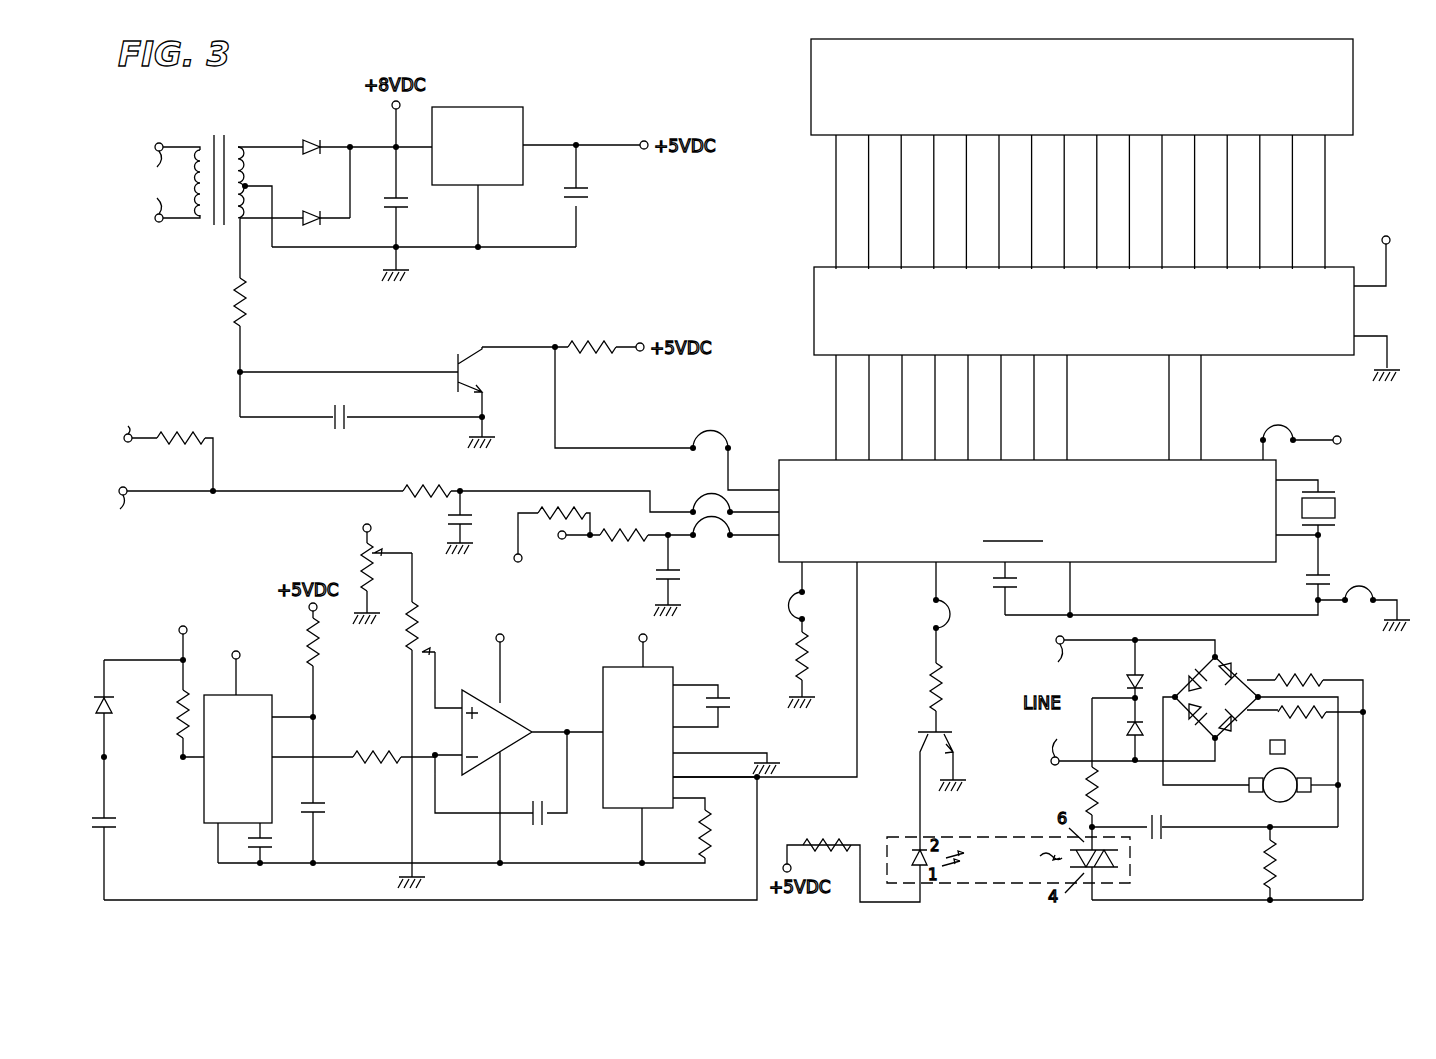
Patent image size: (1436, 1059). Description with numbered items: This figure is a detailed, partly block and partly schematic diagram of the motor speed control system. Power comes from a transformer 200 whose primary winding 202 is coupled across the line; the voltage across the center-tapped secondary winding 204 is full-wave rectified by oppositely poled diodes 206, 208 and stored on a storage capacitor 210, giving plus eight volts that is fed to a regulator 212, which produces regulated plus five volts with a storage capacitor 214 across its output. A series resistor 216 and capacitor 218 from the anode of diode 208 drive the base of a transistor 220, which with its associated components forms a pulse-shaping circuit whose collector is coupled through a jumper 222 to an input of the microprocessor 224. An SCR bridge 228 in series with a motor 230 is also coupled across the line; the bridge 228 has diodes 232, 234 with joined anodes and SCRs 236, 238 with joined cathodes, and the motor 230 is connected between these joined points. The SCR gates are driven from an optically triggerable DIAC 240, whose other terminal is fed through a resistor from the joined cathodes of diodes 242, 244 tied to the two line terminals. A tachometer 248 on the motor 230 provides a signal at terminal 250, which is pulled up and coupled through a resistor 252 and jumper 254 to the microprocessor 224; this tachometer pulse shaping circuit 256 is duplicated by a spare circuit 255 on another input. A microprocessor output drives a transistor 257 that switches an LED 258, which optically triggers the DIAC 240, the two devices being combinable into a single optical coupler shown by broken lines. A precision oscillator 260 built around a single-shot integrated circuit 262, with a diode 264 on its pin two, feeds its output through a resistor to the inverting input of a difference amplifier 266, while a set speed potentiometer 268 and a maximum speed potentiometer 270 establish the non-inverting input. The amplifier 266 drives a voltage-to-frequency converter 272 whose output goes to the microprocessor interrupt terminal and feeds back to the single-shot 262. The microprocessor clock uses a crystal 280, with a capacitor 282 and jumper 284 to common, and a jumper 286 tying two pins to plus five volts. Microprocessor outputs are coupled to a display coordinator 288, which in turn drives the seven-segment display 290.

The transformer 200 is at (226, 125).
The primary winding 202 is at (197, 198).
The secondary winding 204 is at (258, 184).
The diode 206 is at (311, 143).
The diode 208 is at (337, 207).
The storage capacitor 210 is at (410, 202).
The +5 VDC regulator 212 is at (523, 123).
The storage capacitor 214 is at (588, 198).
The resistor 216 is at (254, 303).
The capacitor 218 is at (351, 411).
The transistor 220 is at (456, 361).
The jumper 222 is at (698, 442).
The microprocessor 224 is at (1156, 550).
The SCR bridge 228 is at (1300, 680).
The motor 230 is at (1260, 798).
The diode 232 is at (1187, 676).
The diode 234 is at (1190, 721).
The SCR 236 is at (1245, 672).
The SCR 238 is at (1240, 740).
The optically triggerable DIAC 240 is at (1118, 863).
The diode 242 is at (1126, 680).
The diode 244 is at (1128, 732).
The tachometer 248 is at (1287, 747).
The terminal 250 is at (255, 512).
The resistor 252 is at (428, 478).
The jumper 254 is at (701, 499).
The circuit 255 is at (623, 576).
The tachometer pulse shaping circuit 256 is at (181, 386).
The transistor 257 is at (946, 730).
The LED 258 is at (905, 855).
The precision oscillator 260 is at (233, 575).
The single-shot integrated circuit 262 is at (200, 821).
The diode 264 is at (114, 706).
The difference amplifier 266 is at (477, 698).
The set speed potentiometer 268 is at (362, 570).
The maximum speed potentiometer 270 is at (398, 720).
The voltage-to-frequency converter 272 is at (612, 700).
The crystal 280 is at (1337, 507).
The capacitor 282 is at (1333, 568).
The jumper 284 is at (1366, 592).
The jumper 286 is at (1277, 430).
The display coordinator 288 is at (814, 318).
The seven-segment display 290 is at (827, 96).